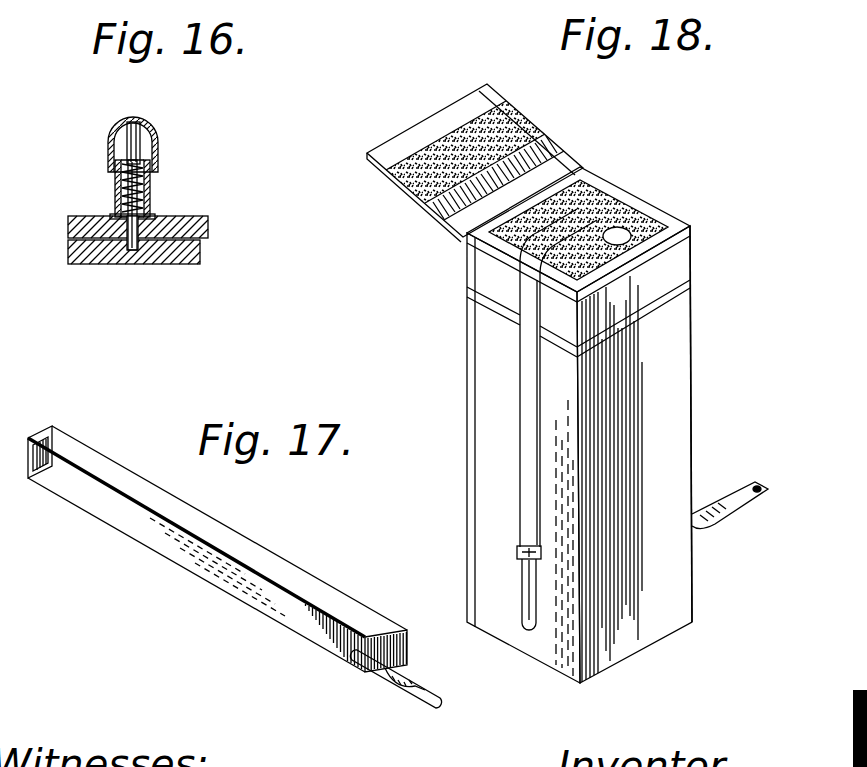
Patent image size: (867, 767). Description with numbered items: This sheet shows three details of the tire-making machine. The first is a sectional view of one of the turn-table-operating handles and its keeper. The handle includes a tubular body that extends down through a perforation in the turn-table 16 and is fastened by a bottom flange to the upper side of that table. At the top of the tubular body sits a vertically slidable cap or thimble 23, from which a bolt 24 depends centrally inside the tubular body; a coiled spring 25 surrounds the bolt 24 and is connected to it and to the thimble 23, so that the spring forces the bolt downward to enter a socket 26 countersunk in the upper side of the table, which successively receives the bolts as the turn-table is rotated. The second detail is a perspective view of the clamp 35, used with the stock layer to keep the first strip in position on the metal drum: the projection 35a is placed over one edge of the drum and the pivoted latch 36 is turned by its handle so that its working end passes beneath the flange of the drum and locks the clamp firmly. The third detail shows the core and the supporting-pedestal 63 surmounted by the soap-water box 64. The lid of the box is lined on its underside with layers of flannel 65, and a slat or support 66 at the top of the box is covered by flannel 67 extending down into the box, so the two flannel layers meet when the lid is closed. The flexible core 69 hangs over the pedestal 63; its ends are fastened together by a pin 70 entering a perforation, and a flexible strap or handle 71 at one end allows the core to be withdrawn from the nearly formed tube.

In FIG. 16, the turn-table 16 is at (86, 232).
In FIG. 16, the cap or thimble 23 is at (158, 151).
In FIG. 16, the bolt 24 is at (127, 141).
In FIG. 16, the coiled spring 25 is at (121, 172).
In FIG. 16, the socket 26 is at (146, 226).
In FIG. 17, the clamp 35 is at (217, 549).
In FIG. 17, the projection 35a is at (50, 482).
In FIG. 17, the pivoted latch 36 is at (402, 681).
In FIG. 18, the box 63 is at (492, 336).
In FIG. 18, the box 64 is at (641, 285).
In FIG. 18, the flannel 65 is at (475, 163).
In FIG. 18, the slat or support 66 is at (630, 241).
In FIG. 18, the flannel 67 is at (623, 224).
In FIG. 18, the flexible core 69 is at (525, 368).
In FIG. 18, the pin 70 is at (525, 553).
In FIG. 18, the flexible strap or handle 71 is at (527, 592).